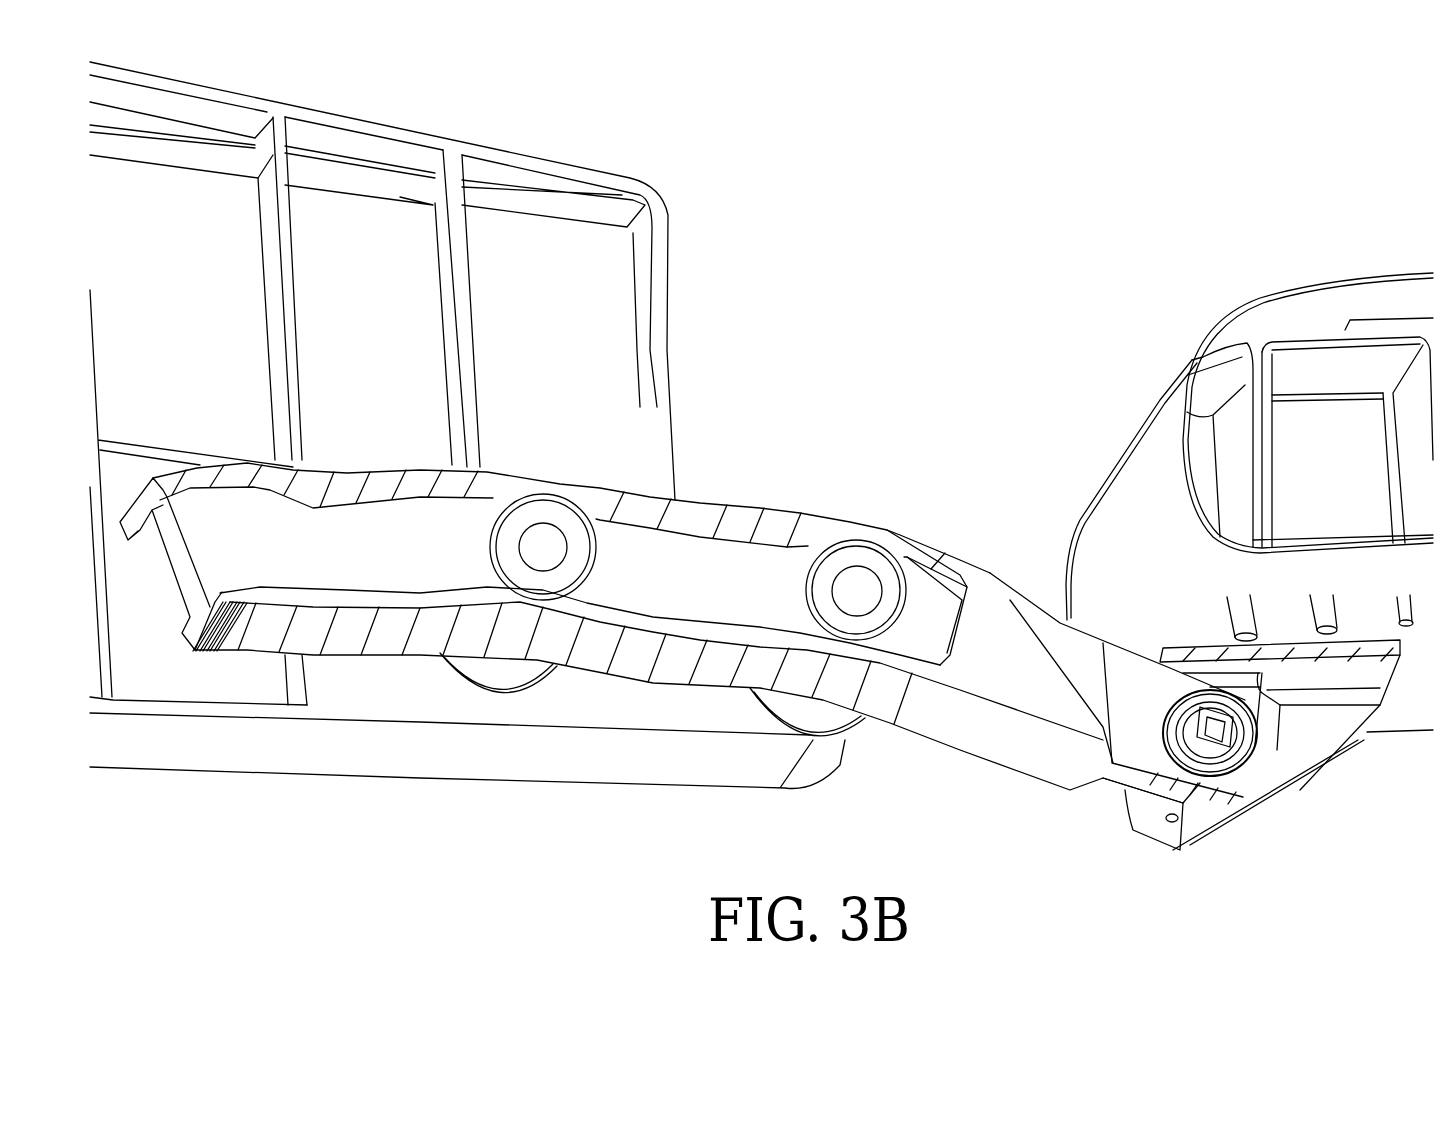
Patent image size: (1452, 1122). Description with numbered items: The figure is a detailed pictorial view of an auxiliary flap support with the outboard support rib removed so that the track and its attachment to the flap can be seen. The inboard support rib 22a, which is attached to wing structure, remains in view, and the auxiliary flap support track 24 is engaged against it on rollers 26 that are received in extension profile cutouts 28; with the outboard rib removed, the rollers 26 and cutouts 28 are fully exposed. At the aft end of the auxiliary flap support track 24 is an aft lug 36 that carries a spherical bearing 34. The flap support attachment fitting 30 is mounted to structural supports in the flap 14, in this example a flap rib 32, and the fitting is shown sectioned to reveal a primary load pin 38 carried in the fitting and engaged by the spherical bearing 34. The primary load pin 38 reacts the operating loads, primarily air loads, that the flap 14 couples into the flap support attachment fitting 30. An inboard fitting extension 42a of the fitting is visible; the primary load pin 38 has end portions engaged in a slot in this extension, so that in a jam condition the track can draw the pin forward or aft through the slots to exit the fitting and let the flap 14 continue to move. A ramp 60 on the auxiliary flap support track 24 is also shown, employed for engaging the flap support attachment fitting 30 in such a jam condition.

The flap 14 is at (1302, 287).
The inboard support rib 22a is at (482, 750).
The auxiliary flap support track 24 is at (1005, 737).
The rollers 26 is at (551, 528).
The extension profile cutouts 28 is at (685, 568).
The flap support attachment fitting 30 is at (1291, 778).
The flap rib 32 is at (1340, 440).
The spherical bearing 34 is at (1203, 762).
The aft lug 36 is at (1150, 760).
The primary load pin 38 is at (1218, 740).
The inboard fitting extension 42a is at (1290, 747).
The ramp 60 is at (1036, 630).